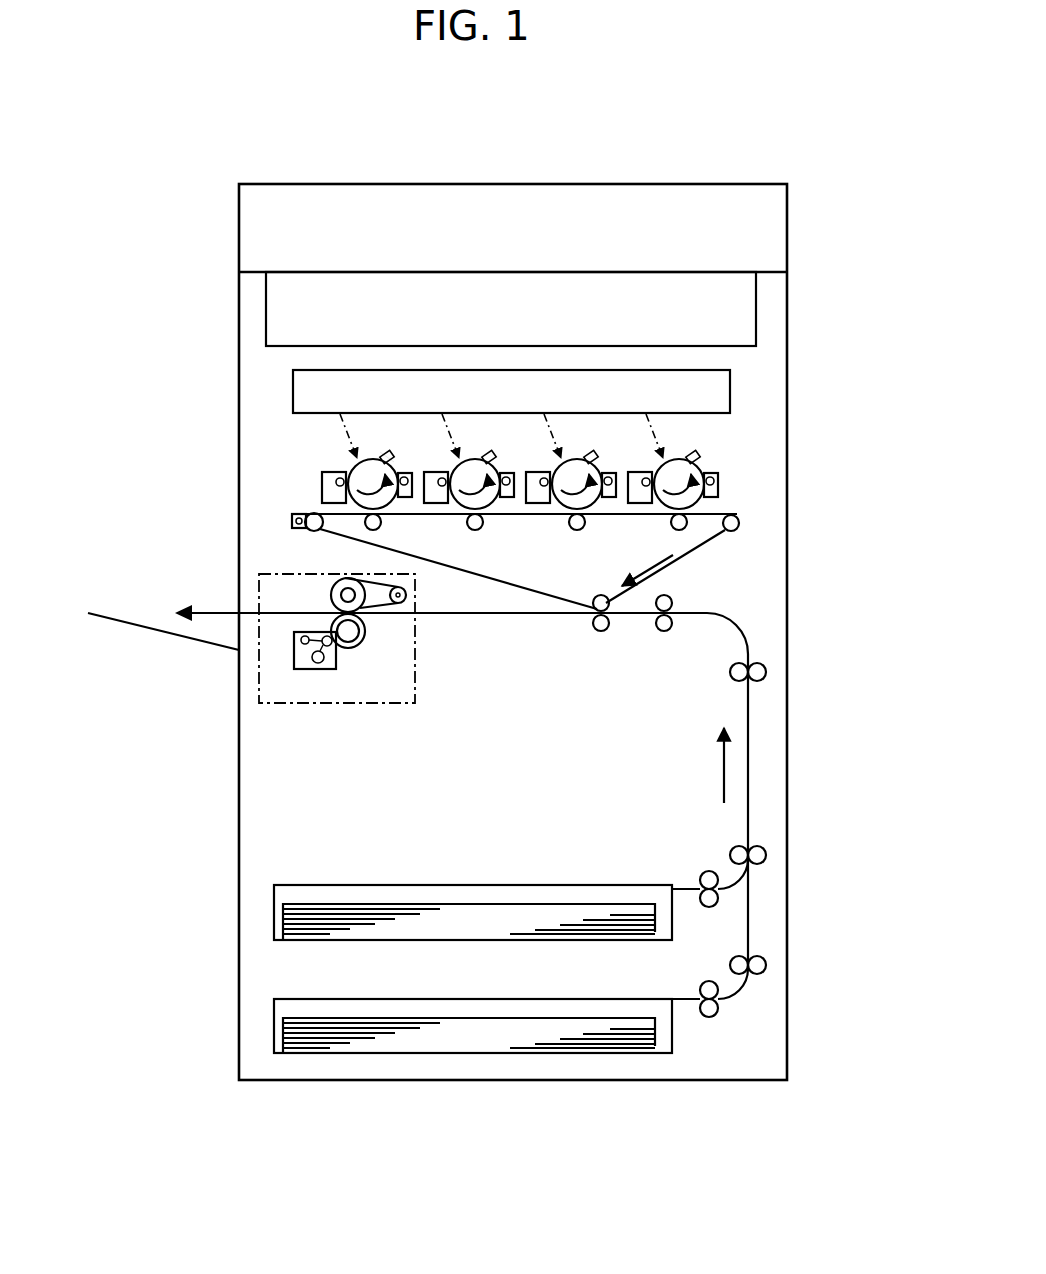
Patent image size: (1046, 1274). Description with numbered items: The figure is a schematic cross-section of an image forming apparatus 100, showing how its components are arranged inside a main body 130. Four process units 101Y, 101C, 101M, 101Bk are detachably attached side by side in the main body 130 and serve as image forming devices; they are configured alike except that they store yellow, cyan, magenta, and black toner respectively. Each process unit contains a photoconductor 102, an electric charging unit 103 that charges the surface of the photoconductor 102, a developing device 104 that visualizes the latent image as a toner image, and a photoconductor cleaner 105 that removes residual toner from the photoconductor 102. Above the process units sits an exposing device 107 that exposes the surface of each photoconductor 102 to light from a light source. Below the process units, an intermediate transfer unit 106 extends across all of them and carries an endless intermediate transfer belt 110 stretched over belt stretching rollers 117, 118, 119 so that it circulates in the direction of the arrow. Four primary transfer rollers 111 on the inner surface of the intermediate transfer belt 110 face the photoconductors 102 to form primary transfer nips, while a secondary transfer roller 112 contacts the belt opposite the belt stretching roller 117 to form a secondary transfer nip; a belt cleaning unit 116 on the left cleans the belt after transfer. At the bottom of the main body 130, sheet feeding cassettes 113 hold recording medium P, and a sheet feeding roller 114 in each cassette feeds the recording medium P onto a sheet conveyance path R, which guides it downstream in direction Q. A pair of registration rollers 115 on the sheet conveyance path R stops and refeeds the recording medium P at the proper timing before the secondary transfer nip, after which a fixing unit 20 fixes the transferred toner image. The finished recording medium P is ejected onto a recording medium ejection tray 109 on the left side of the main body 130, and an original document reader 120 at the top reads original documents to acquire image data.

The image forming apparatus 100 is at (730, 132).
The original document reader 120 is at (397, 184).
The main body 130 is at (239, 458).
The exposing device 107 is at (293, 396).
The process unit 101Y is at (338, 462).
The process unit 101C is at (502, 461).
The process unit 101M is at (601, 461).
The process unit 101Bk is at (703, 461).
The photoconductor 102 is at (340, 471).
The electric charging unit 103 is at (391, 452).
The developing device 104 is at (322, 493).
The photoconductor cleaner 105 is at (412, 472).
The intermediate transfer belt 110 is at (522, 586).
The primary transfer roller 111 is at (381, 529).
The secondary transfer roller 112 is at (603, 632).
The belt cleaning unit 116 is at (293, 529).
The belt stretching roller 117 is at (598, 595).
The belt stretching roller 118 is at (737, 531).
The belt stretching roller 119 is at (318, 532).
The intermediate transfer unit 106 is at (714, 560).
The recording medium ejection tray 109 is at (125, 618).
The fixing unit 20 is at (418, 668).
The sheet feeding cassette 113 is at (504, 885).
The sheet feeding roller 114 is at (692, 877).
The pair of registration rollers 115 is at (770, 672).
The recording medium P is at (431, 904).
The direction Q is at (714, 765).
The sheet conveyance path R is at (749, 765).